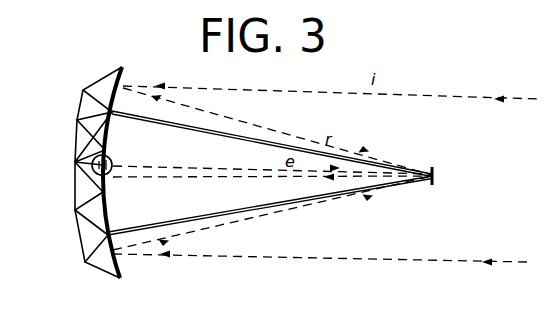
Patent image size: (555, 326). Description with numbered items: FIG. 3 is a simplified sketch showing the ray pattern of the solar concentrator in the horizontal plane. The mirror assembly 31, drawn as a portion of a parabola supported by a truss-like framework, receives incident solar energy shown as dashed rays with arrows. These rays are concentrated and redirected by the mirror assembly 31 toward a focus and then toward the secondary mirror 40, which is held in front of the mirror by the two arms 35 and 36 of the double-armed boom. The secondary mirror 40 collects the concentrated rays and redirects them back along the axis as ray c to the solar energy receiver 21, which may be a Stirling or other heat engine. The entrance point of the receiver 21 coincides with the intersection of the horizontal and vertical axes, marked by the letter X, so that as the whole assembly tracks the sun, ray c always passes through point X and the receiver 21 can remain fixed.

The mirror assembly 31 is at (108, 74).
The solar energy receiver 21 is at (112, 157).
The arm 36 is at (186, 129).
The arm 35 is at (176, 221).
The secondary mirror 40 is at (435, 175).
The intersection point X is at (73, 160).